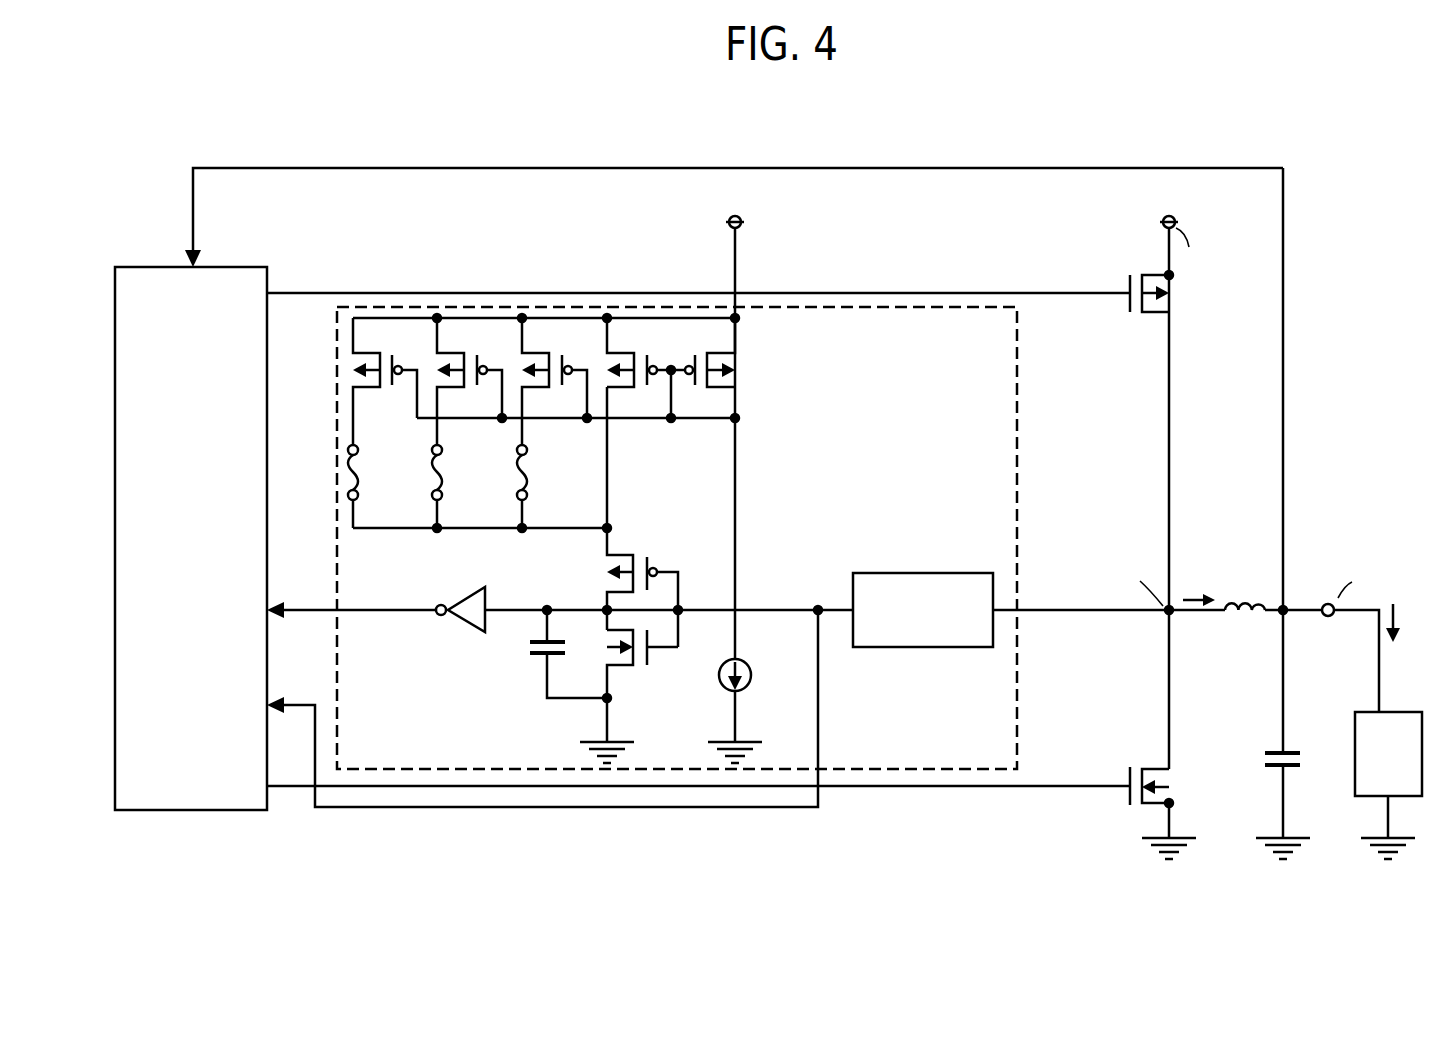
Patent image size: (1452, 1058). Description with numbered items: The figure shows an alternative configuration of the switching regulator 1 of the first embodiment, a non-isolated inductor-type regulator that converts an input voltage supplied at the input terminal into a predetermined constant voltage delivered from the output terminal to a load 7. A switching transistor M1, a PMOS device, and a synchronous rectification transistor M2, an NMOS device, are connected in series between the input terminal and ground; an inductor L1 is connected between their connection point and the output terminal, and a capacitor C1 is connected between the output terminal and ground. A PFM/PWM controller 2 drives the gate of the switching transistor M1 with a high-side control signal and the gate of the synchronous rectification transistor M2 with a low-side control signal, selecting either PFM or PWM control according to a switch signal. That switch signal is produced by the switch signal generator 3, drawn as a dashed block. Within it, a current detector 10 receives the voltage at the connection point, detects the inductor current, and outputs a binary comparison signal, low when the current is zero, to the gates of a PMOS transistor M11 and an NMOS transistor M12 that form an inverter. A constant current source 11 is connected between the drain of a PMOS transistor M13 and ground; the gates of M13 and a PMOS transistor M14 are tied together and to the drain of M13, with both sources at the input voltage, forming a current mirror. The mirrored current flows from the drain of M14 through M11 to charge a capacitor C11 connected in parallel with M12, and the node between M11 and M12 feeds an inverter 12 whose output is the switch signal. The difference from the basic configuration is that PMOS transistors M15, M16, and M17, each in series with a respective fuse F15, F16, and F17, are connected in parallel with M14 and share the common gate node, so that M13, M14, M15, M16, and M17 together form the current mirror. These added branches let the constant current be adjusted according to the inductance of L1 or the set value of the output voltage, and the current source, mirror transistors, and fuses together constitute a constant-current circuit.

The switching regulator 1 is at (835, 146).
The PFM/PWM controller 2 is at (250, 267).
The switch signal generator 3 is at (1030, 366).
The load 7 is at (1405, 712).
The current detector 10 is at (965, 573).
The constant current source 11 is at (745, 660).
The inverter 12 is at (471, 595).
The switching transistor M1 is at (1149, 282).
The synchronous rectification transistor M2 is at (1151, 791).
The PMOS transistor M11 is at (642, 587).
The NMOS transistor M12 is at (640, 686).
The PMOS transistor M13 is at (736, 352).
The PMOS transistor M14 is at (646, 368).
The PMOS transistor M15 is at (554, 381).
The PMOS transistor M16 is at (469, 381).
The PMOS transistor M17 is at (385, 381).
The fuse F15 is at (544, 486).
The fuse F16 is at (459, 486).
The fuse F17 is at (374, 486).
The capacitor C1 is at (1299, 794).
The capacitor C11 is at (556, 635).
The inductor L1 is at (1273, 586).